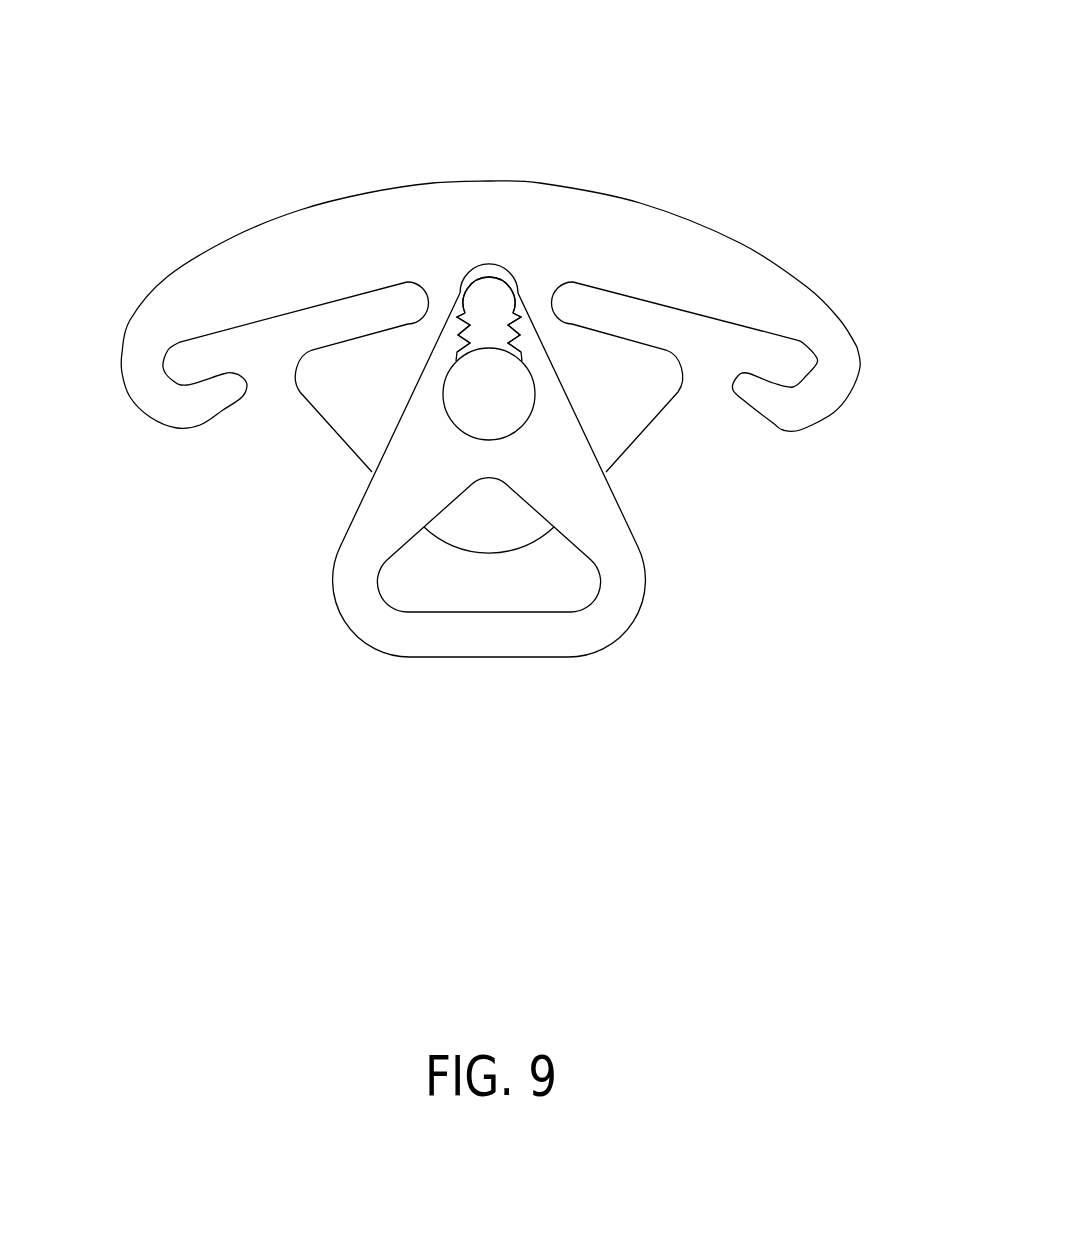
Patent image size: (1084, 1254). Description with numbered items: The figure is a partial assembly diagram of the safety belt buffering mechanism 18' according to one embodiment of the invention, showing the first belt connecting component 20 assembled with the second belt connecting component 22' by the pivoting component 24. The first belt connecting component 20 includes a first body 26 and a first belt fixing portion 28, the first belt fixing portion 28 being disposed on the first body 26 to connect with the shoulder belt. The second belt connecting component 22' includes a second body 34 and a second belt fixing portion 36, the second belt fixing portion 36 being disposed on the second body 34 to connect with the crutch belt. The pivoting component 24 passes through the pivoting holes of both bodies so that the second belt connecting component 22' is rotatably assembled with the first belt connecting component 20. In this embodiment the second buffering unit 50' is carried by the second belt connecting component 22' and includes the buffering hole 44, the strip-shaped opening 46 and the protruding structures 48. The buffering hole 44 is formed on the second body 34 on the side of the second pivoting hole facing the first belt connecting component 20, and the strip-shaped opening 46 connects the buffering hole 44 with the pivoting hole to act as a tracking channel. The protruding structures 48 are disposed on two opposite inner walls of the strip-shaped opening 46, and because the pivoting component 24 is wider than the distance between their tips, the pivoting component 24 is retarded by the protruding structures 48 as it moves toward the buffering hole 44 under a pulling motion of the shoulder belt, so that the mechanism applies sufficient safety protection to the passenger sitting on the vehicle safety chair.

The safety belt buffering mechanism 18' is at (492, 330).
The first belt connecting component 20 is at (705, 453).
The second belt connecting component 22' is at (488, 647).
The pivoting component 24 is at (470, 413).
The first body 26 is at (642, 397).
The first belt fixing portion 28 is at (787, 405).
The second body 34 is at (570, 493).
The second belt fixing portion 36 is at (453, 633).
The buffering hole 44 is at (495, 300).
The strip-shaped opening 46 is at (483, 332).
The protruding structures 48 is at (457, 352).
The second buffering unit 50' is at (483, 201).